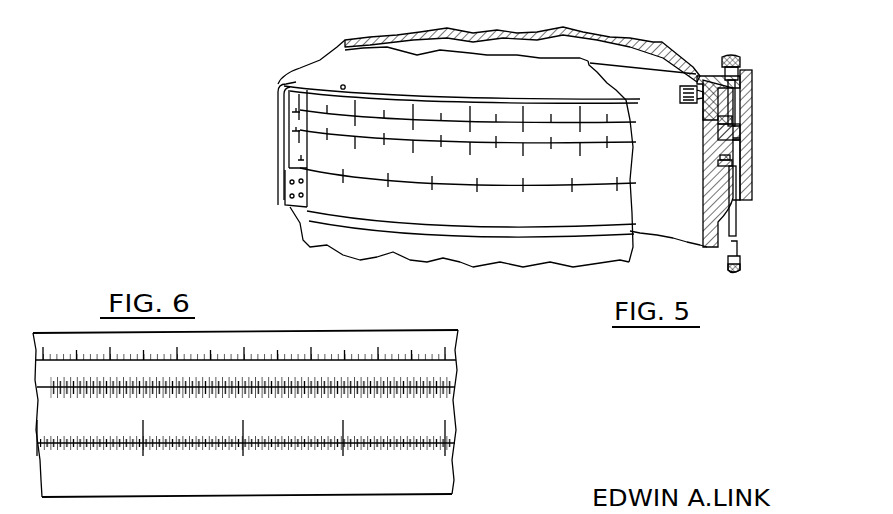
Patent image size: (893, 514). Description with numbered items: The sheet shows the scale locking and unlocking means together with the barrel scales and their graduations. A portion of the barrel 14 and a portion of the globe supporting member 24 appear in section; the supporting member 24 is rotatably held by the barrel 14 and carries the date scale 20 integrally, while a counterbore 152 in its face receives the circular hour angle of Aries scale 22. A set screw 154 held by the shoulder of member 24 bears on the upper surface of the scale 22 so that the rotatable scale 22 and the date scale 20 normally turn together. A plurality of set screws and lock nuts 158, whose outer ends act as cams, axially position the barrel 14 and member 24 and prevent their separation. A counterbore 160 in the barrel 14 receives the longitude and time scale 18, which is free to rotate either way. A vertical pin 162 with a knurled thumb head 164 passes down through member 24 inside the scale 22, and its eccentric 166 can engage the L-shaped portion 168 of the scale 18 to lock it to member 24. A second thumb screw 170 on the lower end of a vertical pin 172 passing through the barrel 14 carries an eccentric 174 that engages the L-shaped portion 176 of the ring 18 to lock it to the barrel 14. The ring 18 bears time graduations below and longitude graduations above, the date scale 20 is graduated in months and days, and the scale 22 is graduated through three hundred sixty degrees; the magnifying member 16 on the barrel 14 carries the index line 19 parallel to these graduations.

In FIG. 5, the barrel-like member 14 is at (335, 243).
In FIG. 5, the magnifying member 16 is at (297, 147).
In FIG. 5, the longitude and time scale 18 is at (627, 170).
In FIG. 6, the longitude and time scale 18 is at (455, 421).
In FIG. 5, the index line 19 is at (291, 114).
In FIG. 5, the date scale 20 is at (625, 132).
In FIG. 6, the date scale 20 is at (452, 362).
In FIG. 5, the hour angle of Aries scale 22 is at (625, 113).
In FIG. 6, the hour angle of Aries scale 22 is at (452, 334).
In FIG. 5, the globe supporting member 24 is at (349, 58).
In FIG. 5, the counterbore 152 is at (746, 103).
In FIG. 5, the set screw 154 is at (346, 87).
In FIG. 5, the set screws and lock nuts 158 is at (680, 92).
In FIG. 5, the counterbore 160 is at (724, 158).
In FIG. 5, the vertical pin 162 is at (733, 90).
In FIG. 5, the knurled thumb head 164 is at (737, 54).
In FIG. 5, the eccentric 166 is at (720, 130).
In FIG. 5, the L-shaped portion 168 is at (718, 119).
In FIG. 5, the thumb screw 170 is at (741, 259).
In FIG. 5, the vertical pin 172 is at (737, 222).
In FIG. 5, the eccentric 174 is at (722, 156).
In FIG. 5, the L-shaped portion 176 is at (722, 162).